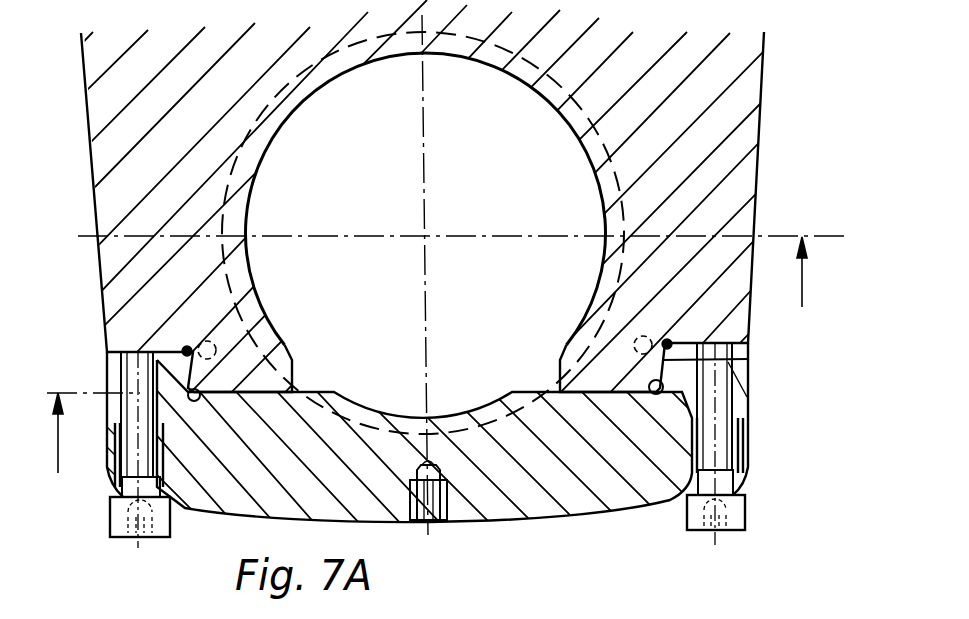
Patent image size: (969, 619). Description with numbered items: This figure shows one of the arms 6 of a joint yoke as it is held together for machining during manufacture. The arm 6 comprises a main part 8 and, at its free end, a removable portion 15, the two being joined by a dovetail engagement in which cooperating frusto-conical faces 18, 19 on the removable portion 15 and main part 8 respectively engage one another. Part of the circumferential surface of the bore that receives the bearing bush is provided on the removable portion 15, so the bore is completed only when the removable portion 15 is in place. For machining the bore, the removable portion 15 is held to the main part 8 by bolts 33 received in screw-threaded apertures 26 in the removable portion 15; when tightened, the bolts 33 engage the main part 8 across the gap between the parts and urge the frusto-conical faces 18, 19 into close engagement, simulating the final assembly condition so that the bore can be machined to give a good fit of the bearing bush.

The arm 6 is at (484, 303).
The main part 8 is at (728, 325).
The removable portion 15 is at (487, 497).
The frusto-conical face 18 is at (649, 396).
The frusto-conical face 19 is at (748, 359).
The screw-threaded aperture 26 is at (740, 397).
The bolt 33 is at (167, 538).